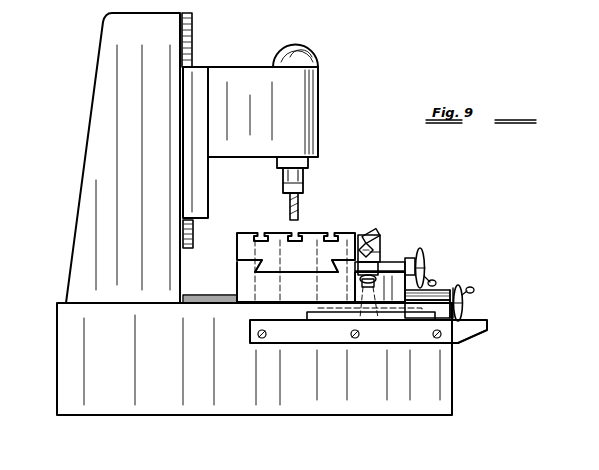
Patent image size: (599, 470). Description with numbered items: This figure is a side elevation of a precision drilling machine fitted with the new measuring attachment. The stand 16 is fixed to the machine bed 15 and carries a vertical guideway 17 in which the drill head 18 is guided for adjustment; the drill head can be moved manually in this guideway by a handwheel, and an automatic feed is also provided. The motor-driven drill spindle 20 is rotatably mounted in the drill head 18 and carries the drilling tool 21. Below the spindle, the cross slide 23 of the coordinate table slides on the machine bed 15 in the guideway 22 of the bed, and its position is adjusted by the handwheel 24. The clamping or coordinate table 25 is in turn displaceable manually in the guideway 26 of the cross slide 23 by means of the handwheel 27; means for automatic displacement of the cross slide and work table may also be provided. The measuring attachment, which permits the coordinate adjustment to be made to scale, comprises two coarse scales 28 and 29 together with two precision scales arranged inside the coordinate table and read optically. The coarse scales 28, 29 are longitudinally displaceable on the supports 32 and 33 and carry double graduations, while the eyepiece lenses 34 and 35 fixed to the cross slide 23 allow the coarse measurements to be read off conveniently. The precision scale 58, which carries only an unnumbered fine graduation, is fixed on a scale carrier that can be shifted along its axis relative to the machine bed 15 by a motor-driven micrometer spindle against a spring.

The machine bed 15 is at (78, 348).
The stand 16 is at (110, 142).
The vertical guideway 17 is at (196, 33).
The drill head 18 is at (300, 106).
The drill spindle 20 is at (305, 186).
The drilling tool 21 is at (298, 214).
The guideway 22 is at (201, 300).
The cross slide 23 is at (254, 297).
The handwheel 24 is at (463, 305).
The coordinate table 25 is at (250, 224).
The guideway 26 is at (258, 264).
The handwheel 27 is at (423, 268).
The coarse scale 28 is at (323, 320).
The coarse scale 29 is at (378, 248).
The support 32 is at (475, 332).
The support 33 is at (382, 255).
The eyepiece lens 34 is at (372, 292).
The eyepiece lens 35 is at (378, 232).
The precision scale 58 is at (317, 312).